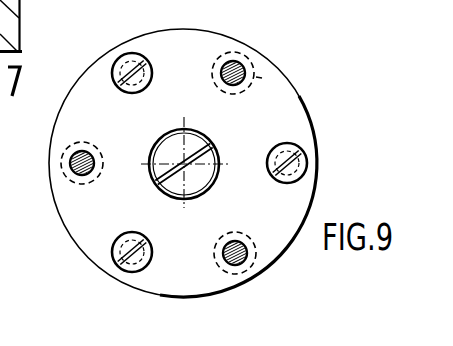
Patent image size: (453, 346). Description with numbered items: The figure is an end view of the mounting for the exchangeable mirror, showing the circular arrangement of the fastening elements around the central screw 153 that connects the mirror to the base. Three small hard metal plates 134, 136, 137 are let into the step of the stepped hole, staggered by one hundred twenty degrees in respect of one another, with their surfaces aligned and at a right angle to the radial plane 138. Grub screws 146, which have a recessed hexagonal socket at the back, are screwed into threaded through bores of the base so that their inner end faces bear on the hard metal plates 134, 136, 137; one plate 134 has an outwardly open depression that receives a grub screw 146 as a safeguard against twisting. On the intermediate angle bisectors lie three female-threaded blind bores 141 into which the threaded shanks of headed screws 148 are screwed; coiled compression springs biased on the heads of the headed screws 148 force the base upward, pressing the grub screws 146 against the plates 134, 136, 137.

The hard metal plate 134 is at (59, 150).
The hard metal plate 136 is at (274, 79).
The hard metal plate 137 is at (268, 270).
The radial plane 138 is at (213, 134).
The blind bore 141 is at (112, 57).
The grub screw 146 is at (240, 67).
The headed screw 148 is at (137, 54).
The central screw 153 is at (203, 175).